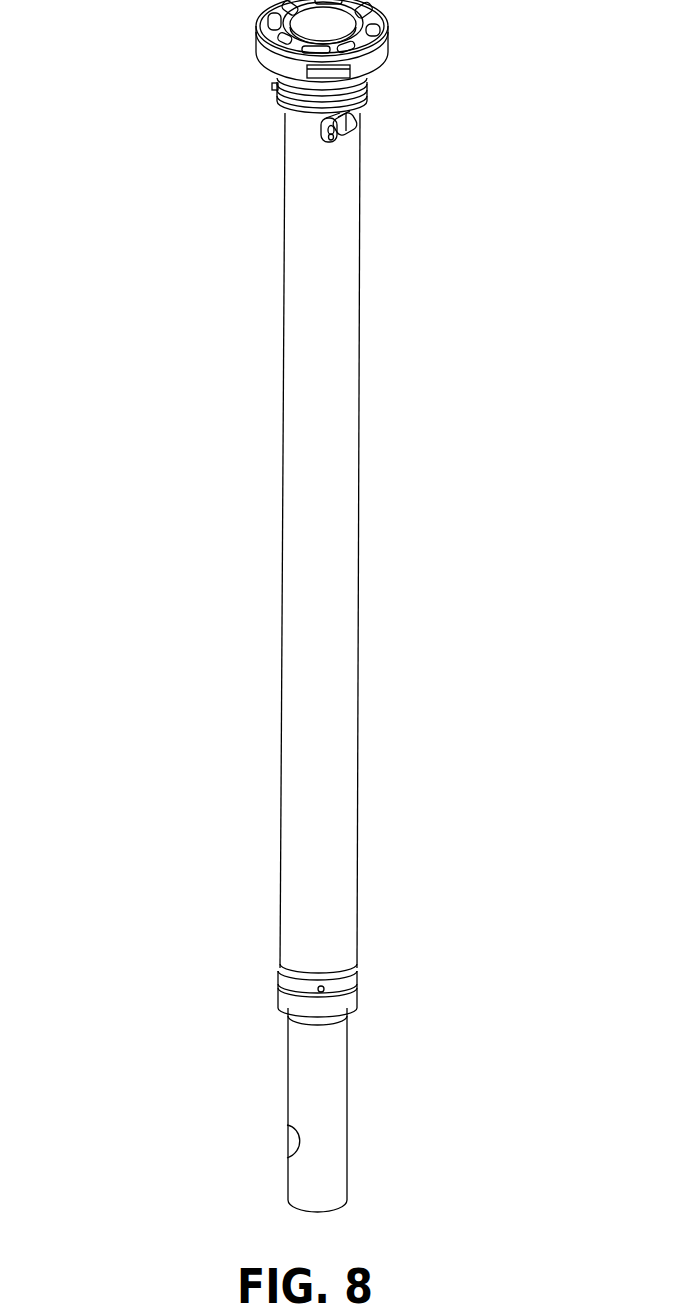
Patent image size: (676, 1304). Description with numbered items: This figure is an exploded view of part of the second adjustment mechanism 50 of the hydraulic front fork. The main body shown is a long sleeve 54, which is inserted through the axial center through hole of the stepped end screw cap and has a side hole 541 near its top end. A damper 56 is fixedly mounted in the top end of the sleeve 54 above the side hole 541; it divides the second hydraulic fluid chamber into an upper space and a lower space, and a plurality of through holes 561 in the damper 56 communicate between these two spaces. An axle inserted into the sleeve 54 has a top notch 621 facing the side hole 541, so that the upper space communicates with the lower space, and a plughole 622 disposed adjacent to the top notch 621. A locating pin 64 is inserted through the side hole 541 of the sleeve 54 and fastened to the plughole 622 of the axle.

The second adjustment mechanism 50 is at (222, 550).
The sleeve 54 is at (330, 557).
The side hole 541 is at (343, 132).
The damper 56 is at (383, 58).
The through holes 561 is at (372, 30).
The top notch 621 is at (346, 115).
The plughole 622 is at (340, 115).
The locating pin 64 is at (330, 138).